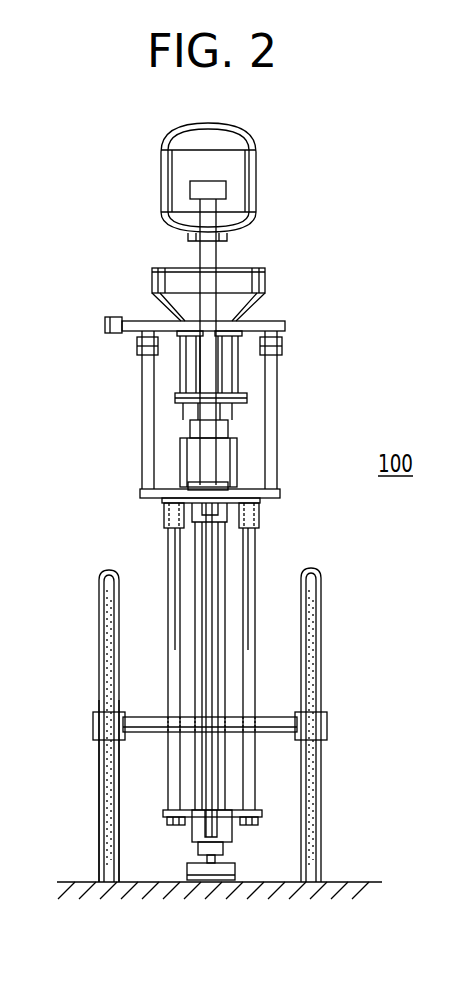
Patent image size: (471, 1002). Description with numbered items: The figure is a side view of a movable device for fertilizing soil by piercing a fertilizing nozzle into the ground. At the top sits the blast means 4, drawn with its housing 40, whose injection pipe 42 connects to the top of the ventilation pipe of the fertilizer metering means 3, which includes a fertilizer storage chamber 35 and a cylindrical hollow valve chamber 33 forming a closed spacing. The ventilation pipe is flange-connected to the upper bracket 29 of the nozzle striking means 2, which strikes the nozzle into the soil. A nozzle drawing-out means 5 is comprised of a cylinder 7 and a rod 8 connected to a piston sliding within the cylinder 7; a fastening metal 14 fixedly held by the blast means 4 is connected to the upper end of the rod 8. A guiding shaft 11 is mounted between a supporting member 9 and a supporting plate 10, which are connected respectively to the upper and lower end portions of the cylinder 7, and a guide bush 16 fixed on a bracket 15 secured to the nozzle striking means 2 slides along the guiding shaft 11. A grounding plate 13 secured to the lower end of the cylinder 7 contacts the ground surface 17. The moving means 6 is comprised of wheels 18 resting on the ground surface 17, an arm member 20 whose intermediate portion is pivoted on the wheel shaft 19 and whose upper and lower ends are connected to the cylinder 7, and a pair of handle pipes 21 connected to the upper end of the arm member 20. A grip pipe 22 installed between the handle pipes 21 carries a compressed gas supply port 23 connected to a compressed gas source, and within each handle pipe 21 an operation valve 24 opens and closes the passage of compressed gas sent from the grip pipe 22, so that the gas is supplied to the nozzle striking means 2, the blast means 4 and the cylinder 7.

The nozzle striking means 2 is at (262, 460).
The fertilizer metering means 3 is at (266, 309).
The blast means 4 is at (268, 168).
The nozzle drawing-out means 5 is at (176, 556).
The moving means 6 is at (330, 676).
The cylinder 7 is at (212, 592).
The rod 8 is at (208, 258).
The supporting member 9 is at (140, 494).
The supporting plate 10 is at (166, 814).
The guiding shaft 11 is at (168, 632).
The grounding plate 13 is at (236, 872).
The fastening metal 14 is at (192, 190).
The bracket 15 is at (262, 501).
The guide bush 16 is at (164, 518).
The ground surface 17 is at (76, 892).
The wheels 18 is at (120, 778).
The wheel shaft 19 is at (275, 734).
The arm member 20 is at (210, 682).
The handle pipes 21 is at (142, 400).
The grip pipe 22 is at (137, 326).
The compressed gas supply port 23 is at (105, 326).
The operation valve 24 is at (136, 346).
The upper bracket 29 is at (190, 432).
The valve chamber 33 is at (228, 377).
The fertilizer storage chamber 35 is at (263, 276).
The tank wall 40 is at (170, 160).
The injection pipe 42 is at (185, 238).